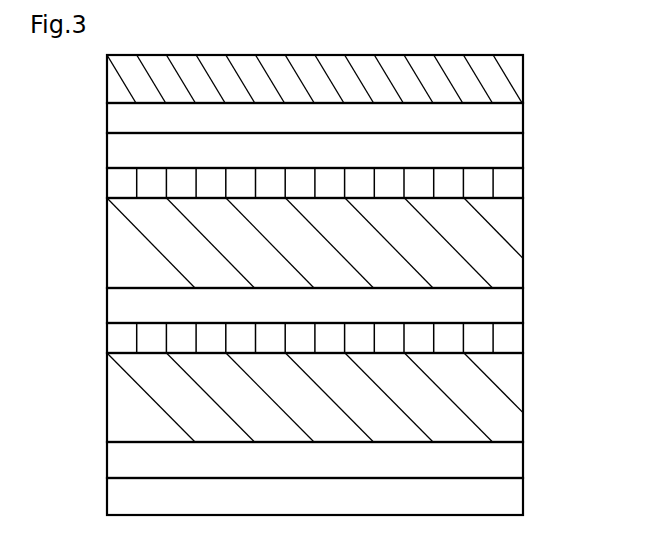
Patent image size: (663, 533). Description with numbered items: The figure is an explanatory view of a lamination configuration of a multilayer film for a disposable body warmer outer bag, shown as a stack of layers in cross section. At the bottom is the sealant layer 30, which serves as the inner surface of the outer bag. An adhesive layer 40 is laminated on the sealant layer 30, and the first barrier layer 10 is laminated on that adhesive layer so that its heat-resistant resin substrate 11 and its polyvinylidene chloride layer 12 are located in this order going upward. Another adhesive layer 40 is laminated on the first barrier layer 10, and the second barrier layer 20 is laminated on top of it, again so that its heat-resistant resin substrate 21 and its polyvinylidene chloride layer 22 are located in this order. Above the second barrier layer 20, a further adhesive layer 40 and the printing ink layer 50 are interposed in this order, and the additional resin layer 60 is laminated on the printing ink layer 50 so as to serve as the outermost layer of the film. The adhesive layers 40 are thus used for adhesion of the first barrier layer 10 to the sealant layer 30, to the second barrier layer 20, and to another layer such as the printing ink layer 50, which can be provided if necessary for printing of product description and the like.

The additional resin layer 60 is at (502, 82).
The printing ink layer 50 is at (502, 121).
The adhesive layer 40 is at (502, 152).
The polyvinylidene chloride layer 22 is at (125, 187).
The heat-resistant resin substrate 21 is at (125, 257).
The second barrier layer 20 is at (321, 228).
The polyvinylidene chloride layer 12 is at (125, 343).
The heat-resistant resin substrate 11 is at (125, 413).
The first barrier layer 10 is at (321, 382).
The sealant layer 30 is at (502, 497).